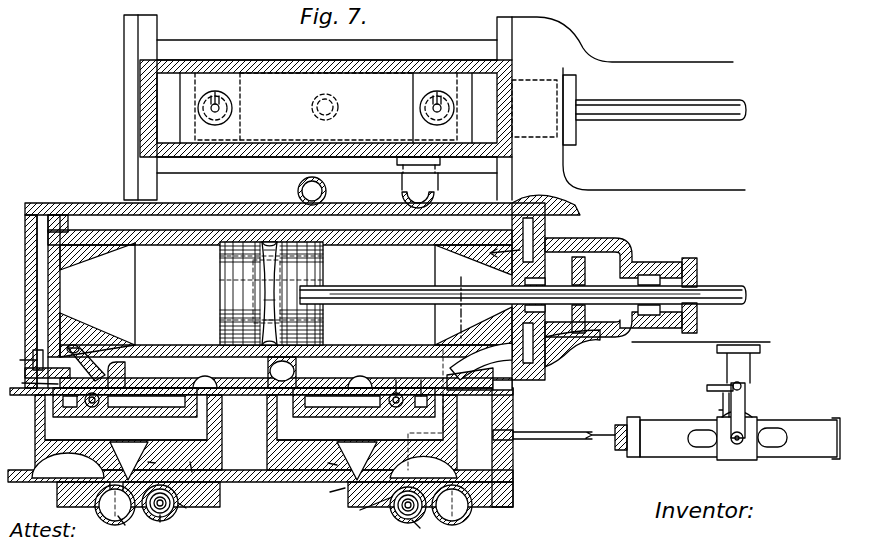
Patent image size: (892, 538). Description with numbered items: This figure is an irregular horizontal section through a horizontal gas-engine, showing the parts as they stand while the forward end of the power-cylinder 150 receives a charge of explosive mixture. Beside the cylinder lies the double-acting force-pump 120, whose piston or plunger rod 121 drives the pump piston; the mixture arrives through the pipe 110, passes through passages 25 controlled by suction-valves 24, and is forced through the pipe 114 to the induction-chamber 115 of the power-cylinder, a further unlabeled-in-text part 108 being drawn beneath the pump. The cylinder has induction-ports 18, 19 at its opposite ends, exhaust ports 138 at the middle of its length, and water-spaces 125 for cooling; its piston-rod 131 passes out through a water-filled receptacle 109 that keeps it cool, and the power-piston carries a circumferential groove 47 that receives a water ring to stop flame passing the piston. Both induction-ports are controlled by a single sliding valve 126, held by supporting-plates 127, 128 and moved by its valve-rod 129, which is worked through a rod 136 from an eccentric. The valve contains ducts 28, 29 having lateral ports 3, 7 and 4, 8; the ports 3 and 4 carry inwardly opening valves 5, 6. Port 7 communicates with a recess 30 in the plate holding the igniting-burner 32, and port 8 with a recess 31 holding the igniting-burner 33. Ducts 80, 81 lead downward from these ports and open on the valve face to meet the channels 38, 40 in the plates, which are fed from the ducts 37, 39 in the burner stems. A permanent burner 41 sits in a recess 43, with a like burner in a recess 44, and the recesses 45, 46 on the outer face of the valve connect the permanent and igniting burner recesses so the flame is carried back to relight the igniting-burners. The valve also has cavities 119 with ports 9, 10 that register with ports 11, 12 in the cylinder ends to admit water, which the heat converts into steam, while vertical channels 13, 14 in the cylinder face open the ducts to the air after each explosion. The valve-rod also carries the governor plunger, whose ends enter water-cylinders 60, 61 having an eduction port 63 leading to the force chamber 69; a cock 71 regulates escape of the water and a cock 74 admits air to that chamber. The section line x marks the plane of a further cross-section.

The double-acting force-pump 120 is at (318, 107).
The suction-valves 24 is at (437, 103).
The passages 25 is at (326, 108).
The pipe 114 is at (326, 106).
The piston or plunger rod 121 is at (606, 112).
The pin 108 is at (326, 191).
The pipe 110 is at (433, 194).
The water-spaces 125 is at (552, 227).
The power-cylinder 150 is at (285, 294).
The rod 136 is at (256, 291).
The circumferential groove 47 is at (270, 293).
The exhaust ports 138 is at (308, 319).
The piston-rod 131 is at (712, 286).
The section line x x is at (487, 294).
The receptacle 109 is at (628, 250).
The port 11 is at (25, 360).
The port 9 is at (40, 378).
The lateral port 3 is at (96, 378).
The induction-port 18 is at (118, 369).
The vertical channel 13 is at (210, 382).
The vertical channel 14 is at (350, 378).
The induction-chamber 115 is at (282, 372).
The cavities 119 is at (259, 447).
The valve 126 is at (278, 482).
The supporting-plate 127 is at (220, 490).
The supporting-plate 128 is at (434, 501).
The duct 28 is at (126, 431).
The duct 29 is at (360, 431).
The lateral port 7 is at (129, 461).
The lateral port 8 is at (357, 461).
The recess 45 is at (68, 465).
The recess 46 is at (423, 467).
The duct 80 is at (158, 462).
The duct 81 is at (326, 462).
The vertical channel 38 is at (192, 462).
The channel 40 is at (332, 494).
The recess 43 is at (99, 510).
The recess 30 is at (172, 510).
The recess 31 is at (394, 512).
The recess 44 is at (462, 516).
The permanent burner 41 is at (125, 527).
The igniting-burner 32 is at (157, 526).
The laterally-extending duct 37 is at (188, 508).
The duct 39 is at (368, 510).
The igniting-burner 33 is at (419, 529).
The valve 5 is at (92, 408).
The valve 6 is at (395, 408).
The lateral port 4 is at (397, 380).
The port 10 is at (418, 384).
The induction-port 19 is at (460, 406).
The port 12 is at (512, 388).
The valve-rod 129 is at (575, 440).
The water-cylinder 60 is at (732, 437).
The water-cylinder 61 is at (821, 438).
The eduction port 63 is at (700, 462).
The force chamber 69 is at (745, 402).
The cock 71 is at (719, 409).
The cock 74 is at (712, 385).